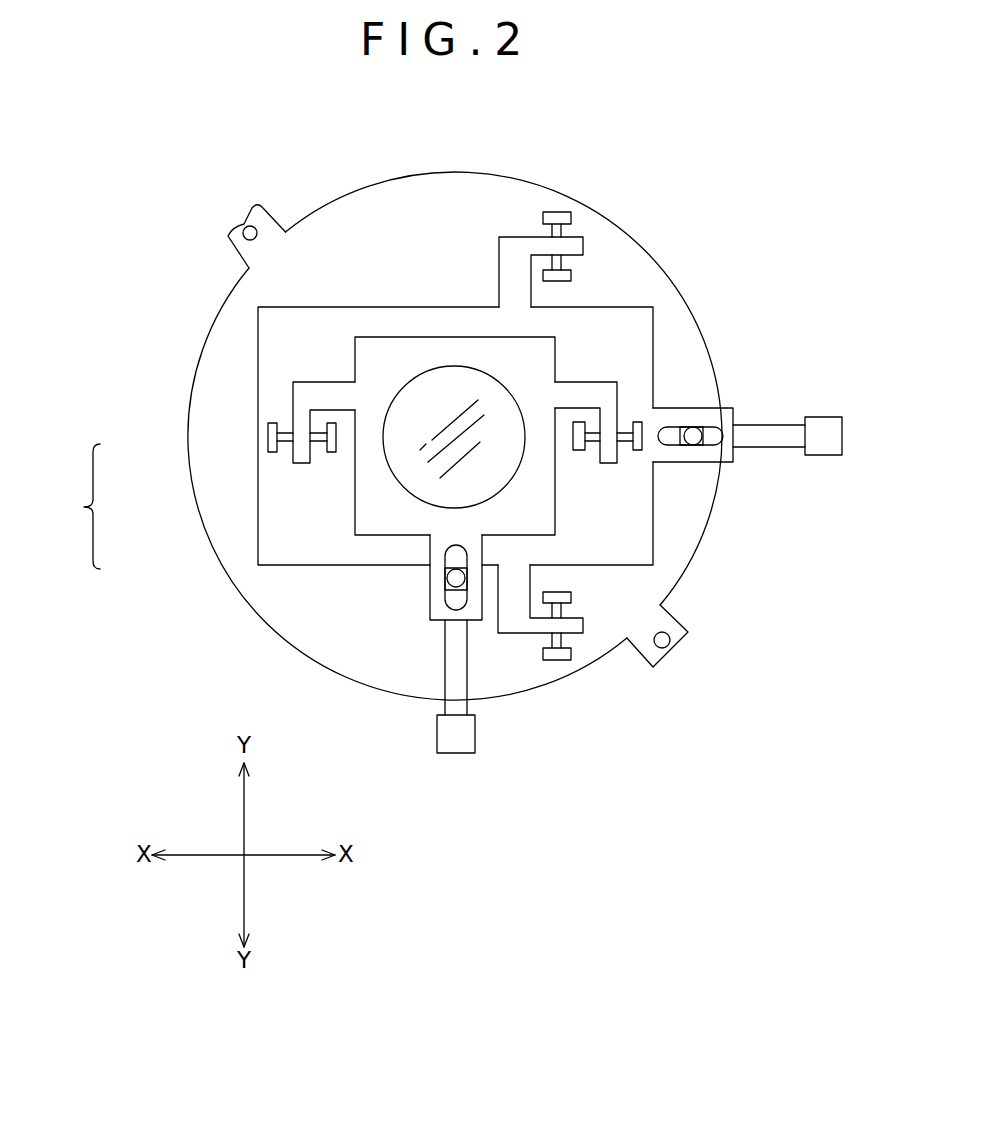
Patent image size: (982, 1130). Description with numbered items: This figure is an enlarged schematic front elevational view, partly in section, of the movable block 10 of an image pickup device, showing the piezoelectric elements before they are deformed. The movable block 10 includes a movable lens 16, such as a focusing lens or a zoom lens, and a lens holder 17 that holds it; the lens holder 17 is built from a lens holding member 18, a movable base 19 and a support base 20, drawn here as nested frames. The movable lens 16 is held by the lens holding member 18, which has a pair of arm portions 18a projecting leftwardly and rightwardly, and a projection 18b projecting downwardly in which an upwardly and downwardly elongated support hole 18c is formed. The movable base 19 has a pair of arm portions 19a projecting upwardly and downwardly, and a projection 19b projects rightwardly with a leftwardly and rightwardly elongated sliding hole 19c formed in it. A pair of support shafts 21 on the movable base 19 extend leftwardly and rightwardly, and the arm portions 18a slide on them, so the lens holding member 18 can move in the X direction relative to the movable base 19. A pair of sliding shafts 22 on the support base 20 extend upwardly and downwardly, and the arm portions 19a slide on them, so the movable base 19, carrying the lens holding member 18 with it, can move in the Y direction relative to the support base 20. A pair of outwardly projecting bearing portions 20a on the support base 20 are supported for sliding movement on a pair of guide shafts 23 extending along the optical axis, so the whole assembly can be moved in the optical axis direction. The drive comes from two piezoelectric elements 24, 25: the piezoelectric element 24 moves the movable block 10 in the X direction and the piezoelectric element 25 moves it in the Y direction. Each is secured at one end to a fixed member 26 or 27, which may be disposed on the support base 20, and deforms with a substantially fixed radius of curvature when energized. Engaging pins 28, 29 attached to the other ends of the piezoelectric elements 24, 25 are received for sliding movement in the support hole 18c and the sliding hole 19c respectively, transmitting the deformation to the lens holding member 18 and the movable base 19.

The movable block 10 is at (719, 202).
The movable lens 16 is at (438, 380).
The lens holder 17 is at (76, 506).
The lens holding member 18 is at (365, 520).
The arm portions 18a is at (297, 410).
The projection 18b is at (432, 612).
The support hole 18c is at (447, 598).
The movable base 19 is at (273, 498).
The arm portions 19a is at (531, 237).
The projection 19b is at (725, 462).
The sliding hole 19c is at (668, 438).
The support base 20 is at (200, 457).
The bearing portions 20a is at (270, 212).
The support shafts 21 is at (285, 432).
The sliding shafts 22 is at (565, 232).
The guide shafts 23 is at (245, 230).
The piezoelectric element 24 is at (447, 650).
The piezoelectric element 25 is at (775, 440).
The fixed member 26 is at (457, 750).
The fixed member 27 is at (820, 417).
The engaging pin 28 is at (444, 580).
The engaging pin 29 is at (696, 430).